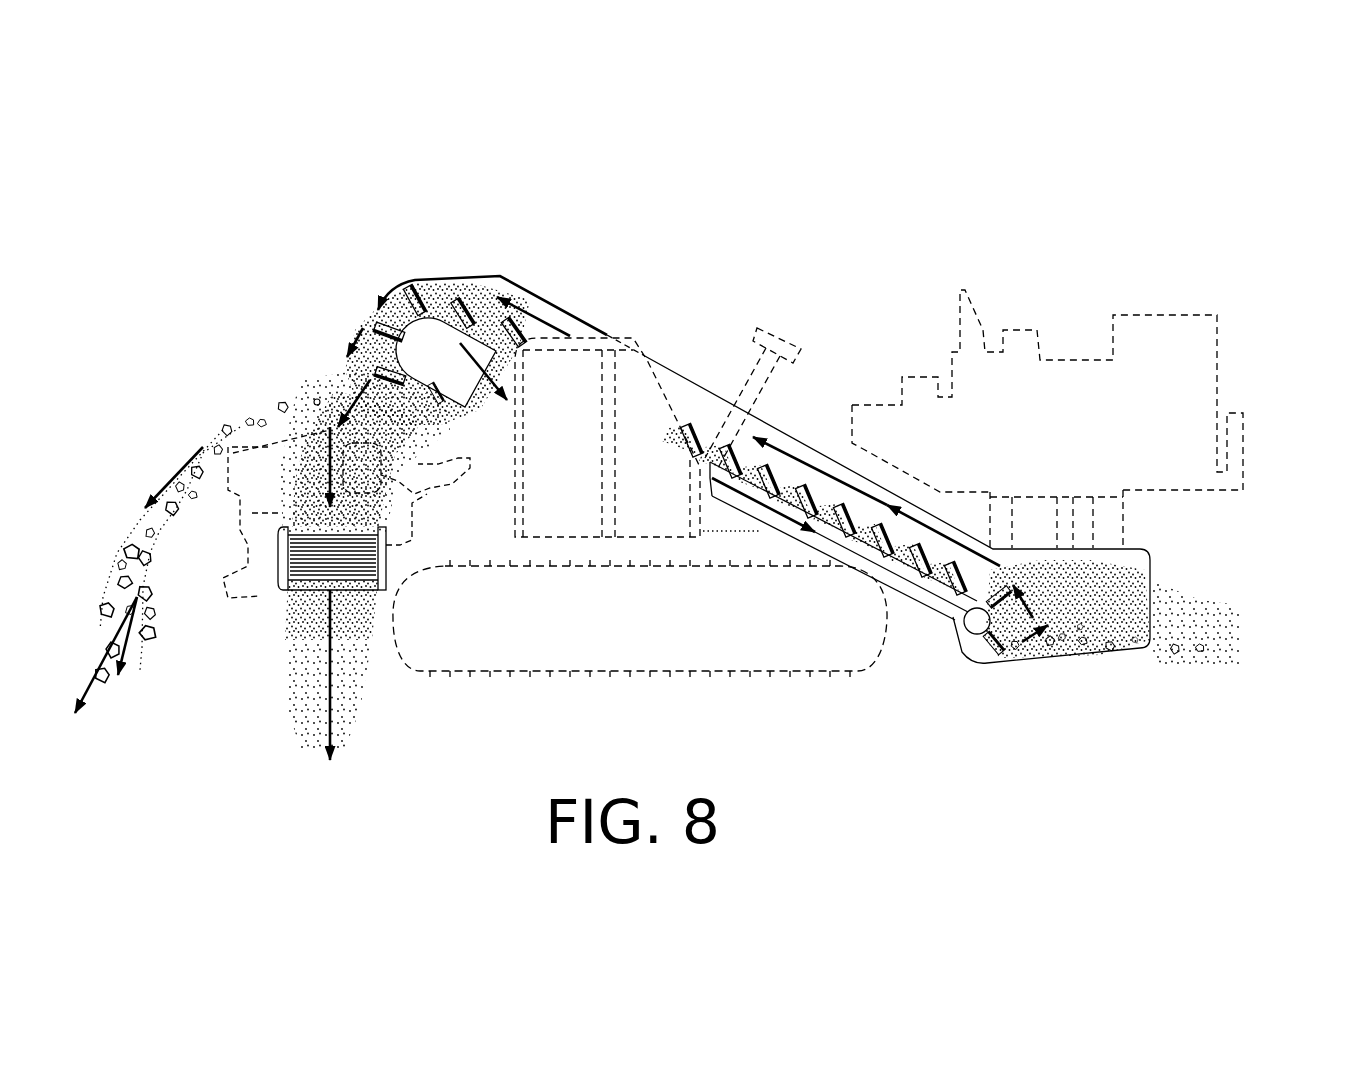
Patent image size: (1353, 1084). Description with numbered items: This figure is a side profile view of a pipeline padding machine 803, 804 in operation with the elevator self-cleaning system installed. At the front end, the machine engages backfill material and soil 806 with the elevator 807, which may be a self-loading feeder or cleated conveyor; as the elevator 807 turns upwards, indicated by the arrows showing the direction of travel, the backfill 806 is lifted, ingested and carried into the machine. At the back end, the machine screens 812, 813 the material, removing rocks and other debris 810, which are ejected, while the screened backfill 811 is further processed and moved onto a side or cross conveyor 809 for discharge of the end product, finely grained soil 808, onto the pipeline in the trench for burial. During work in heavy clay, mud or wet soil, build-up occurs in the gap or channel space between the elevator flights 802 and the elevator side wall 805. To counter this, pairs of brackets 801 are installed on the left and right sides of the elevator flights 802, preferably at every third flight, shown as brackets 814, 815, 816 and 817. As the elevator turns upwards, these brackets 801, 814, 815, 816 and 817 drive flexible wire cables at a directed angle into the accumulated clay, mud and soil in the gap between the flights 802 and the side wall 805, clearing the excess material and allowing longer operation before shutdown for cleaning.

The bracket 801 is at (445, 322).
The elevator flights 802 is at (470, 296).
The pipeline padding machine 803 is at (633, 343).
The pipeline padding machine 804 is at (1178, 369).
The elevator side wall 805 is at (1146, 566).
The backfill material and soil 806 is at (1105, 612).
The elevator 807 is at (976, 638).
The finely grained soil 808 is at (307, 648).
The side or cross conveyor 809 is at (280, 577).
The rocks and other debris 810 is at (127, 538).
The backfill 811 is at (293, 455).
The screens 812 is at (313, 412).
The screens 813 is at (352, 388).
The bracket 814 is at (417, 375).
The bracket 815 is at (887, 567).
The bracket 816 is at (968, 610).
The bracket 817 is at (785, 500).